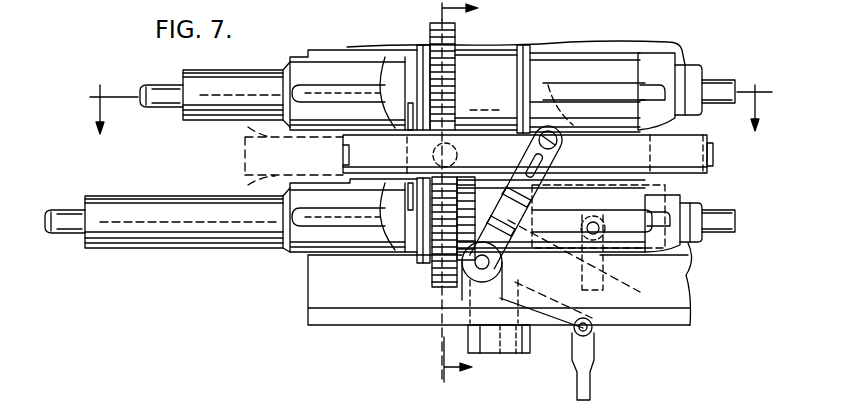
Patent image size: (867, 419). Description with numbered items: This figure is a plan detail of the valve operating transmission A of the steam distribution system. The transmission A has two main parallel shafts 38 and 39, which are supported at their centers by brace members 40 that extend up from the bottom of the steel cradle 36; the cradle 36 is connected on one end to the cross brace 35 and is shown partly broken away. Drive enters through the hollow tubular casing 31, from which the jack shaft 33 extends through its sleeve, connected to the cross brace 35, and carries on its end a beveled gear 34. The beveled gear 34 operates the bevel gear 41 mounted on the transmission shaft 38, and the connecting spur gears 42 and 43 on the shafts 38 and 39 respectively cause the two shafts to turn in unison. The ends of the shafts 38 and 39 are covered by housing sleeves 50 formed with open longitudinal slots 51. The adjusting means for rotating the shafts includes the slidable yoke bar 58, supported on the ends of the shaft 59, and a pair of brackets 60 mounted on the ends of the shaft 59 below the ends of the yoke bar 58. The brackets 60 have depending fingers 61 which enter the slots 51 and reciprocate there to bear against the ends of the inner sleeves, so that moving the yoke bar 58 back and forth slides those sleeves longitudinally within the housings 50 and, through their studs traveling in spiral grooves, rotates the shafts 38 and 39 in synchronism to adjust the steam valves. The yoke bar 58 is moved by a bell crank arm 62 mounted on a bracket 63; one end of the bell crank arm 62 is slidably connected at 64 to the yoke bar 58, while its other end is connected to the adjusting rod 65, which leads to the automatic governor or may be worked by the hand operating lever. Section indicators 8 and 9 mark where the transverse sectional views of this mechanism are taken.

The section line 8- 8 is at (451, 194).
The section line 9- 9 is at (431, 96).
The hollow tubular casing 31 is at (527, 350).
The jack shaft 33 is at (503, 356).
The beveled gear 34 is at (533, 275).
The cross brace 35 is at (412, 330).
The steel cradle 36 is at (663, 290).
The transmission shaft 38 is at (66, 228).
The transmission shaft 39 is at (157, 92).
The brace members 40 is at (425, 60).
The bevel gear 41 is at (474, 215).
The spur gear 42 is at (440, 258).
The spur gear 43 is at (445, 55).
The housing sleeves 50 is at (208, 100).
The longitudinal slots 51 is at (330, 90).
The yoke bar 58 is at (690, 168).
The shaft 59 is at (715, 156).
The brackets 60 is at (428, 62).
The depending fingers 61 is at (413, 105).
The bell crank arm 62 is at (535, 295).
The bracket 63 is at (494, 296).
The slidable connection 64 is at (538, 152).
The adjusting rod 65 is at (590, 386).
The transmission A is at (487, 67).